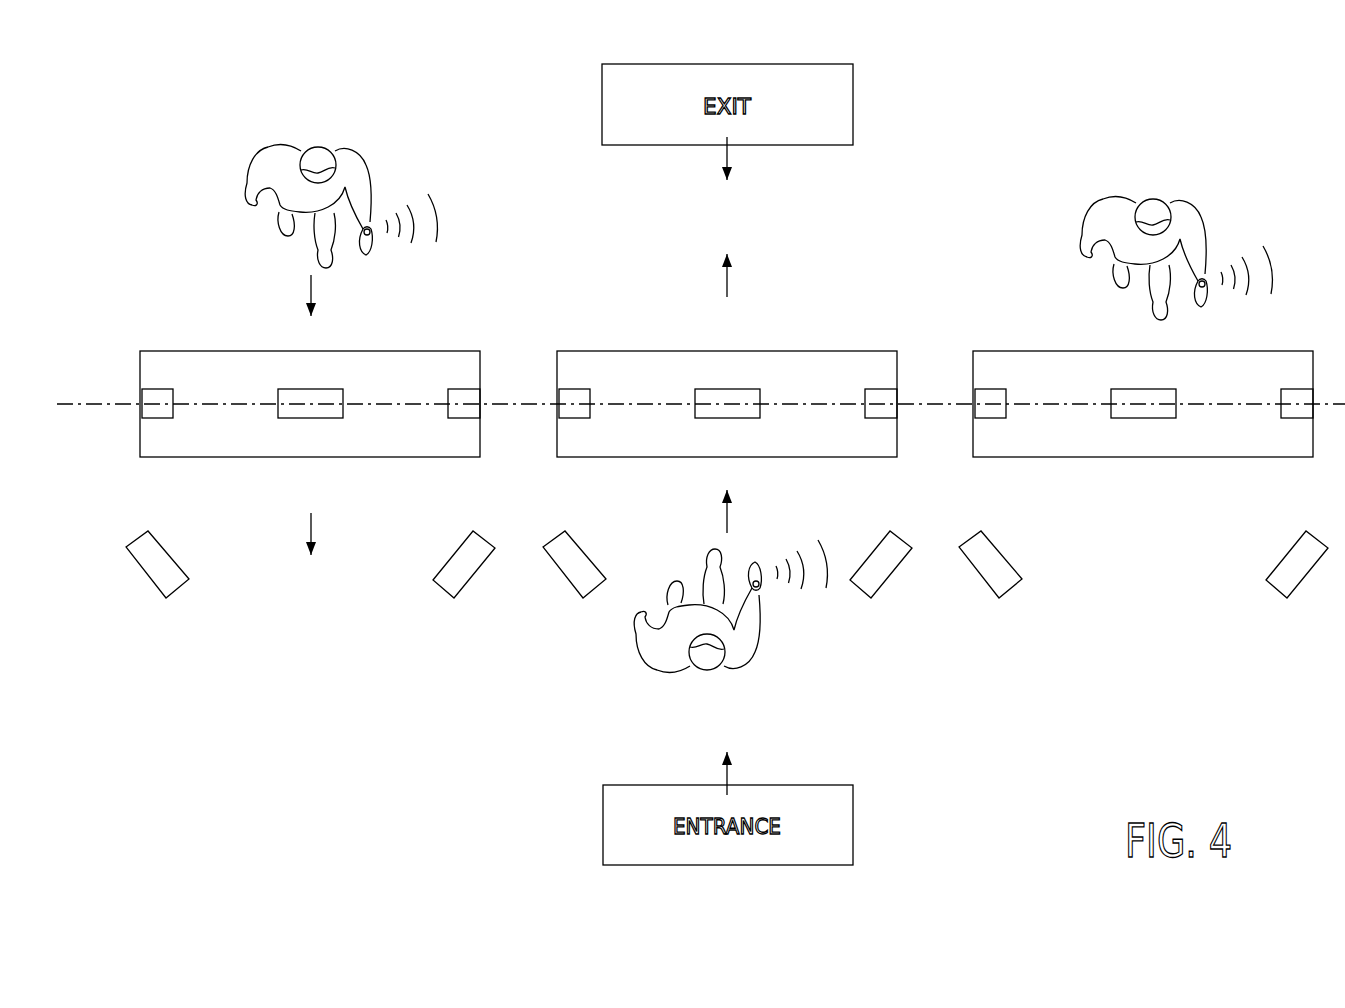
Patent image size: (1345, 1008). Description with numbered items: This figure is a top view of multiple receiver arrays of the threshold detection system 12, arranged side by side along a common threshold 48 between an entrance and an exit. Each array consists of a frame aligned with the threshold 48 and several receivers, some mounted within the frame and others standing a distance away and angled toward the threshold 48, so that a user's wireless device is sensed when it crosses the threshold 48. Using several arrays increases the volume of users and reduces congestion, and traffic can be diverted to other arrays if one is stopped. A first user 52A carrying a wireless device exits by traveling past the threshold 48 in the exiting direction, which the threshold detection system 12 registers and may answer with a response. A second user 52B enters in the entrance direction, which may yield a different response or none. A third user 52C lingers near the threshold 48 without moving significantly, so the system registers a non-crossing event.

The threshold detection system 12 is at (193, 91).
The threshold 48 is at (96, 405).
The first user 52A is at (231, 140).
The second user 52B is at (637, 665).
The third user 52C is at (1091, 199).